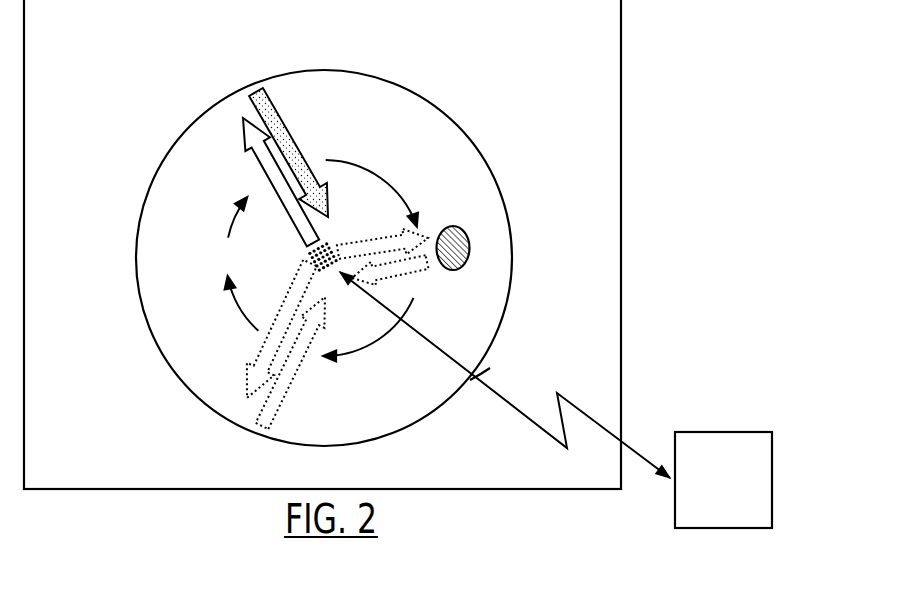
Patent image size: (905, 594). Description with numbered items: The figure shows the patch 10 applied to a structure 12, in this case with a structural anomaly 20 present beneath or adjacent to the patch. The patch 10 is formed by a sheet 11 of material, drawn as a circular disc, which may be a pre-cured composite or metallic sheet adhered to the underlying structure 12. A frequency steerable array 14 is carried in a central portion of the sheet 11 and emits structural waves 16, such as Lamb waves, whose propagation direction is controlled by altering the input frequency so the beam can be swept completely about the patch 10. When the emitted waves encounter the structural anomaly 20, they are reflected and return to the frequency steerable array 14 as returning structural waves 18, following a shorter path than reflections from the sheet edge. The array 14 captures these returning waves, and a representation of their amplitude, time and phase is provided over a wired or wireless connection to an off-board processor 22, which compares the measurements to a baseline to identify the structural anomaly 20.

The patch 10 is at (449, 92).
The sheet of material 11 is at (474, 375).
The structure 12 is at (607, 143).
The frequency steerable array 14 is at (307, 252).
The structural waves 16 is at (247, 143).
The returning structural waves 18 is at (280, 138).
The structural anomaly 20 is at (470, 250).
The processor 22 is at (720, 432).